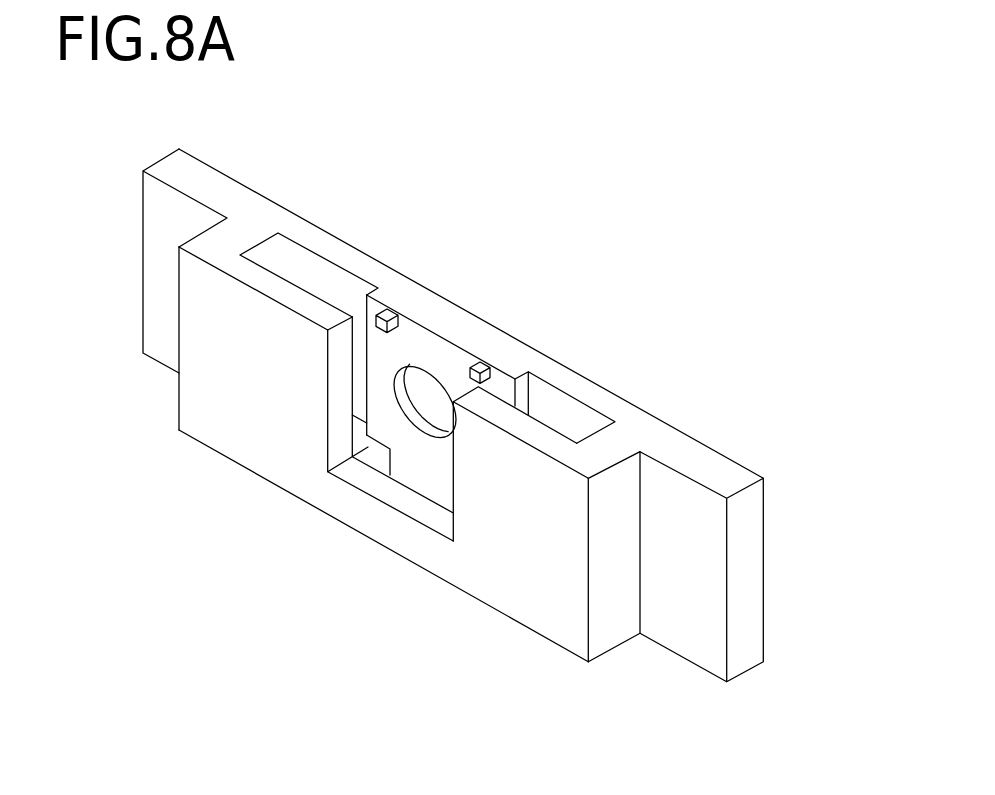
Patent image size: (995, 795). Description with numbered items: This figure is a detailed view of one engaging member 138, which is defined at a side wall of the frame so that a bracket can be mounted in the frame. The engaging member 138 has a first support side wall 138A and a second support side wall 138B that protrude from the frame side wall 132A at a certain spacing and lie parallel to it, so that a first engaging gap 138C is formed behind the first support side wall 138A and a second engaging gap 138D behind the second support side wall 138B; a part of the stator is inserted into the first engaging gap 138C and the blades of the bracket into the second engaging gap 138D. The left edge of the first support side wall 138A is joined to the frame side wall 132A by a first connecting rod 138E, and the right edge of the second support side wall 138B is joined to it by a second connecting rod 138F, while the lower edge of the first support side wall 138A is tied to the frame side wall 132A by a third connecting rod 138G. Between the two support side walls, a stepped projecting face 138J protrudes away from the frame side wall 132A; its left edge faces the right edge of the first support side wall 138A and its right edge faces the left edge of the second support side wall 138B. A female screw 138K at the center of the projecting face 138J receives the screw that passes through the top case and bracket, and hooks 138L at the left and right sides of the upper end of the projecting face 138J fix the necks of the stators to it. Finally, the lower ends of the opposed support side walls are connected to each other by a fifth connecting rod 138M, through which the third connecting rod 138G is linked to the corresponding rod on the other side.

The frame side wall 132A is at (208, 184).
The engaging member 138 is at (711, 257).
The first support side wall 138A is at (230, 418).
The second support side wall 138B is at (513, 595).
The first engaging gap 138C is at (313, 272).
The second engaging gap 138D is at (565, 408).
The first connecting rod 138E is at (215, 250).
The second connecting rod 138F is at (613, 623).
The third connecting rod 138G is at (350, 458).
The projecting face 138J is at (422, 403).
The female screw 138K is at (433, 460).
The hooks 138L is at (395, 313).
The fifth connecting rod 138M is at (390, 475).